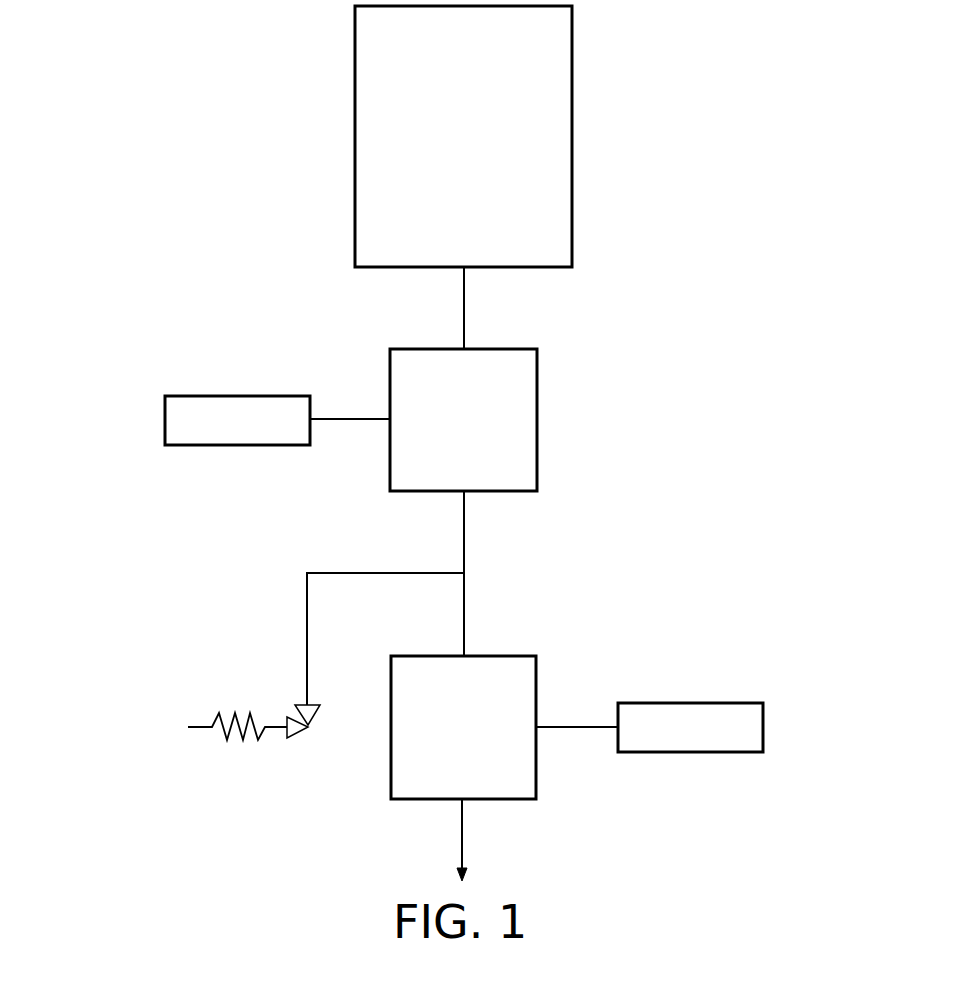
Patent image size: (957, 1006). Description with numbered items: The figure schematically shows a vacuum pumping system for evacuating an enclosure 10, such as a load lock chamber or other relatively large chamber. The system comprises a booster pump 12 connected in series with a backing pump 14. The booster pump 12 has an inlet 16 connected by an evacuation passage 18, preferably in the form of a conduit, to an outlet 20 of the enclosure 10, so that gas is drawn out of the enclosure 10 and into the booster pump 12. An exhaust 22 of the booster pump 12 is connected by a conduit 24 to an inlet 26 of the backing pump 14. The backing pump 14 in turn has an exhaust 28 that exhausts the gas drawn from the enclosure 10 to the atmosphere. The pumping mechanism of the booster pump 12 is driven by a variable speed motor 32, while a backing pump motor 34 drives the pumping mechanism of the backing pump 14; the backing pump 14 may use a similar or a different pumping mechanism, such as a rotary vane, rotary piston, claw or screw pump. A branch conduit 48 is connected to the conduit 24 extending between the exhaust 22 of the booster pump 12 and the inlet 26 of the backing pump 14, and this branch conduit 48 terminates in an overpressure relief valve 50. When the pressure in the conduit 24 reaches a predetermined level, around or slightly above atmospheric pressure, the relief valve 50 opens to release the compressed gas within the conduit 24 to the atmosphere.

The enclosure 10 is at (572, 27).
The booster pump 12 is at (537, 370).
The backing pump 14 is at (537, 785).
The inlet 16 is at (467, 348).
The evacuation passage 18 is at (463, 311).
The outlet 20 is at (468, 270).
The exhaust 22 is at (467, 495).
The conduit 24 is at (466, 617).
The inlet 26 is at (462, 655).
The exhaust 28 is at (460, 805).
The variable speed motor 32 is at (187, 396).
The backing pump motor 34 is at (736, 703).
The branch conduit 48 is at (352, 573).
The overpressure relief valve 50 is at (295, 718).